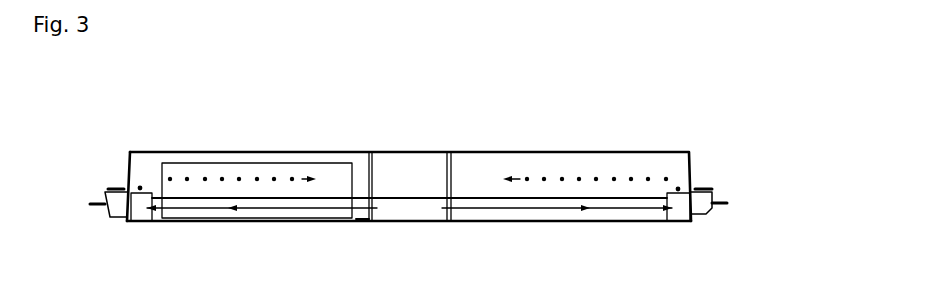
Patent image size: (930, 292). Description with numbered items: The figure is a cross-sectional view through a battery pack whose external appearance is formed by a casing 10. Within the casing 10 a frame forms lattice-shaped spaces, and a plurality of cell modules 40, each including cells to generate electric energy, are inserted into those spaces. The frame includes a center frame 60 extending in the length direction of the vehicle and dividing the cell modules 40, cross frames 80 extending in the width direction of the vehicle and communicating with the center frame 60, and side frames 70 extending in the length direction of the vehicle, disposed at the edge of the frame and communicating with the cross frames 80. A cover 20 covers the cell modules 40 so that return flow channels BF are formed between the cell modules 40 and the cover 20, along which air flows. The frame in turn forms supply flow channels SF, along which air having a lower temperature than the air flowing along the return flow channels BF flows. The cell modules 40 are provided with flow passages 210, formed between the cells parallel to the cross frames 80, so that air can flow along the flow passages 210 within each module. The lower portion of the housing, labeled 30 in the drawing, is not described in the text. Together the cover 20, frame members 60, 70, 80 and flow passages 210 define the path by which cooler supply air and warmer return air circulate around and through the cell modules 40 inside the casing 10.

The casing 10 is at (471, 185).
The cover 20 is at (690, 153).
The bottom cover / lower housing 30 is at (645, 222).
The cell module 40 is at (332, 162).
The center frame 60 is at (421, 198).
The side frame 70 is at (128, 222).
The cross frame 80 is at (296, 200).
The flow passage 210 is at (238, 165).
The return flow channel BF is at (142, 160).
The supply flow channel SF is at (150, 212).